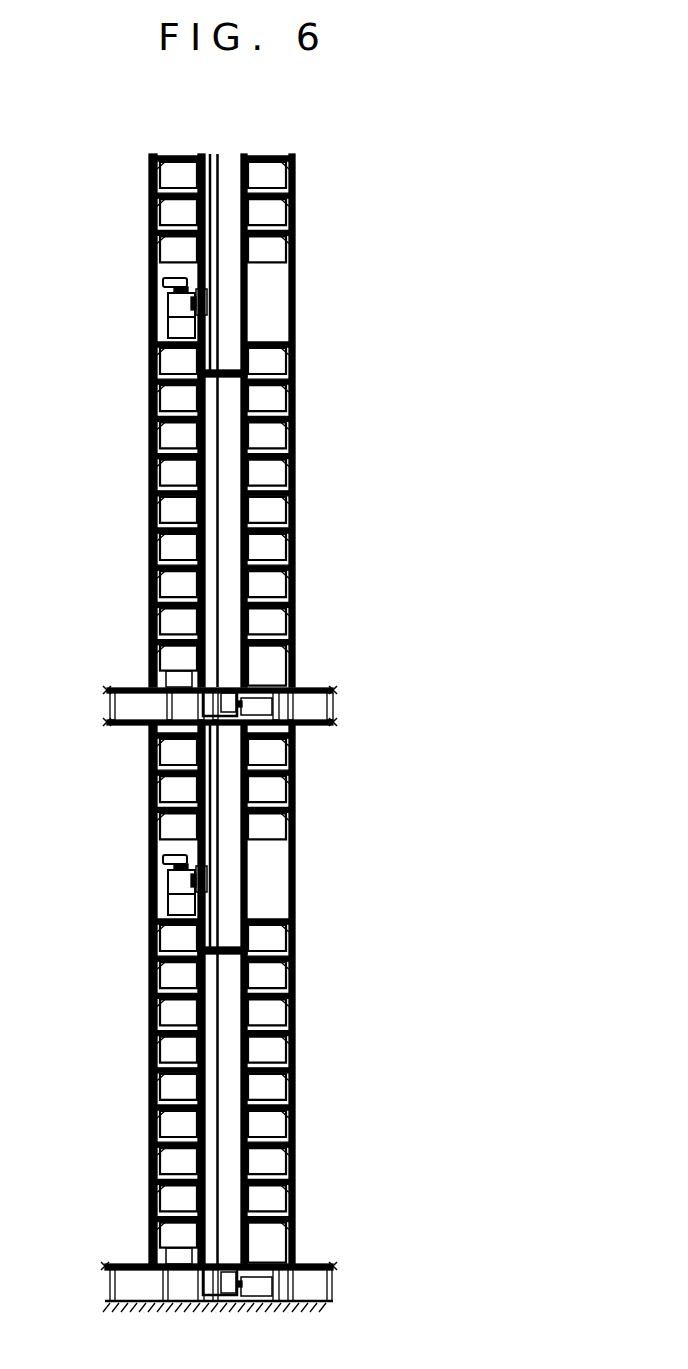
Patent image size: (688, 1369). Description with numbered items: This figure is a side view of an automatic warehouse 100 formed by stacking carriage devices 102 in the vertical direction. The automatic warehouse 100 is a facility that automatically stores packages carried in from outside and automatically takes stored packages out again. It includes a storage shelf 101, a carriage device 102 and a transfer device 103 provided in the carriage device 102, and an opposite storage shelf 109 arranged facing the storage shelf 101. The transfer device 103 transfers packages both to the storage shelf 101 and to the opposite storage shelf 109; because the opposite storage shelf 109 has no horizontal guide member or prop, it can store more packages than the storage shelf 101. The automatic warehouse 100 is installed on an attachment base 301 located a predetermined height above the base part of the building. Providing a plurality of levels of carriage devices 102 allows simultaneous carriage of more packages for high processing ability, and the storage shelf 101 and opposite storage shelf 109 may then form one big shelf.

The automatic warehouse 100 is at (400, 189).
The storage shelf 101 is at (149, 545).
The carriage device 102 is at (212, 208).
The transfer device 103 is at (197, 367).
The opposite storage shelf 109 is at (296, 541).
The attachment base 301 is at (312, 687).